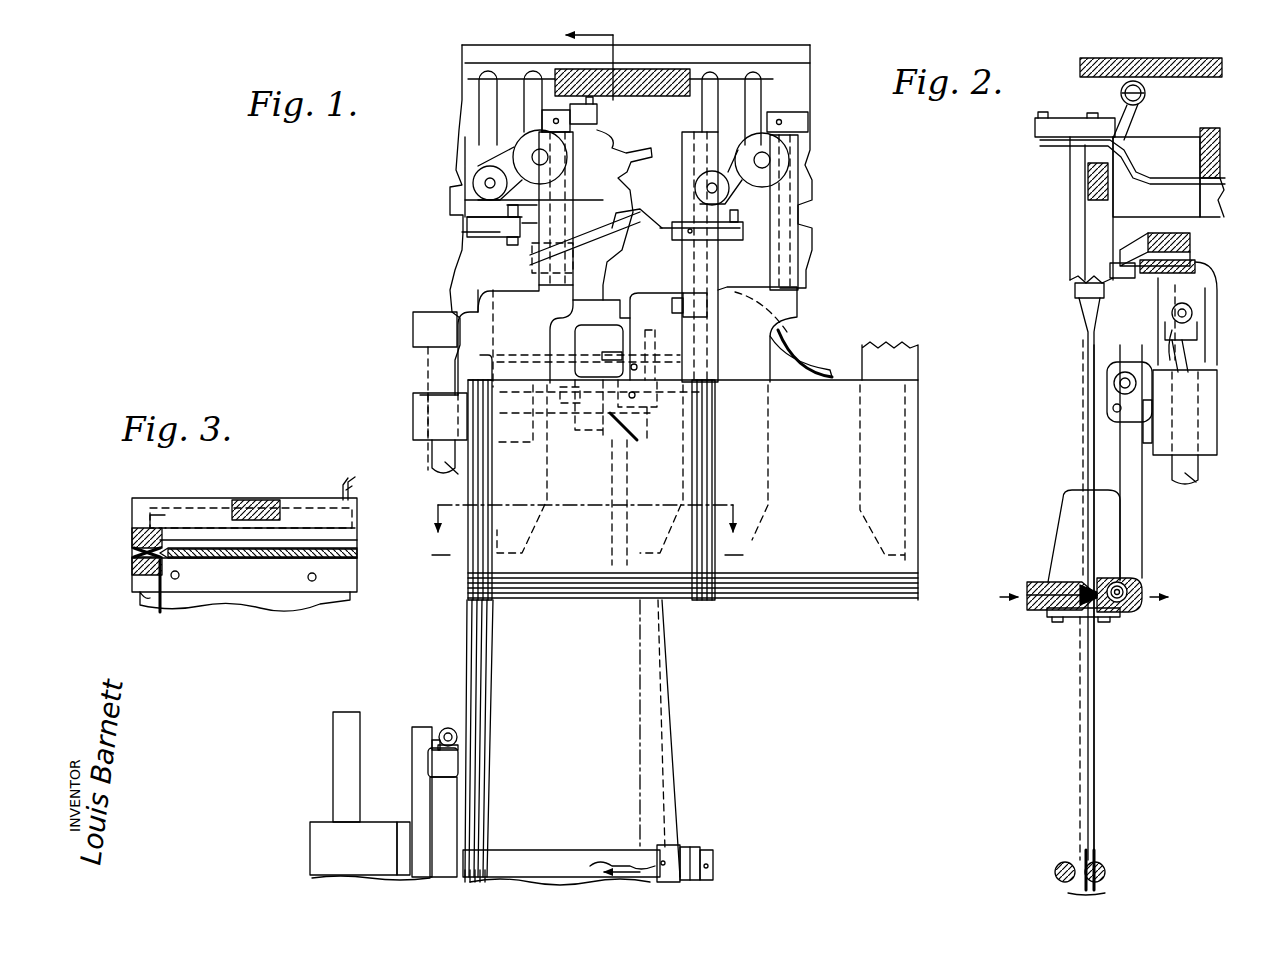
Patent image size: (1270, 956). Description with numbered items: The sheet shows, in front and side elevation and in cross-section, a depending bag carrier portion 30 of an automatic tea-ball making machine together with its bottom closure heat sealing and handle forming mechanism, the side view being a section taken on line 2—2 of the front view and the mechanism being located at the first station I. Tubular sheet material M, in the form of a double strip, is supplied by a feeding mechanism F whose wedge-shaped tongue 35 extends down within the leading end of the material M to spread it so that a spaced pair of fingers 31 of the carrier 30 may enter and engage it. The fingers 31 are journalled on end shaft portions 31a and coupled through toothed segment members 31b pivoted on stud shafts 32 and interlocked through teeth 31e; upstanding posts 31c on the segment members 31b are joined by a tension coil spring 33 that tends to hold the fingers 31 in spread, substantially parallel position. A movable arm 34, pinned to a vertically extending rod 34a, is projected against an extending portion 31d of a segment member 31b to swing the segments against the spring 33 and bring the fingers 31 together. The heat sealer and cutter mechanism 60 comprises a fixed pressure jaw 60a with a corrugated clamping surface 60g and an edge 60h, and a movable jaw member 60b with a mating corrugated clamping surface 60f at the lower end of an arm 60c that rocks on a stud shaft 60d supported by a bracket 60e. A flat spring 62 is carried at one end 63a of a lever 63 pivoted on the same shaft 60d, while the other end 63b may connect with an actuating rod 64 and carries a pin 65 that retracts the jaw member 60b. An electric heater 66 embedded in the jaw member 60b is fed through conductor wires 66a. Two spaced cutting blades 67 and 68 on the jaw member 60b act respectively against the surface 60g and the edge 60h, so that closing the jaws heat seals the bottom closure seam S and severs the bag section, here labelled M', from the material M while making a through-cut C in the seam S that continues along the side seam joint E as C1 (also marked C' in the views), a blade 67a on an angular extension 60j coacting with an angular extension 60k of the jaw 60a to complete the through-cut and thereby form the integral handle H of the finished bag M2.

In FIG. 1, the depending bag carrier portion 30 is at (818, 312).
In FIG. 1, the fingers 31 is at (507, 330).
In FIG. 2, the fingers 31 is at (1088, 355).
In FIG. 3, the fingers 31 is at (300, 556).
In FIG. 1, the end shaft portions 31a is at (556, 110).
In FIG. 2, the end shaft portions 31a is at (1092, 113).
In FIG. 1, the toothed segment members 31b is at (600, 166).
In FIG. 2, the toothed segment members 31b is at (1088, 178).
In FIG. 1, the upstanding posts 31c is at (533, 78).
In FIG. 2, the upstanding posts 31c is at (1125, 118).
In FIG. 1, the extending portion 31d is at (598, 262).
In FIG. 2, the extending portion 31d is at (1192, 240).
In FIG. 1, the teeth 31e is at (592, 252).
In FIG. 1, the stud shafts 32 is at (520, 160).
In FIG. 1, the tension coil spring 33 is at (668, 72).
In FIG. 2, the tension coil spring 33 is at (1146, 95).
In FIG. 1, the movable arm 34 is at (537, 263).
In FIG. 2, the movable arm 34 is at (1197, 268).
In FIG. 1, the vertically extending rod 34a is at (430, 384).
In FIG. 2, the vertically extending rod 34a is at (1196, 476).
In FIG. 1, the wedge-shaped tongue 35 is at (662, 705).
In FIG. 2, the wedge-shaped tongue 35 is at (1092, 683).
In FIG. 2, the heat sealer and cutter mechanism 60 is at (1120, 620).
In FIG. 3, the heat sealer and cutter mechanism 60 is at (116, 496).
In FIG. 1, the fixed pressure jaw 60a is at (470, 605).
In FIG. 2, the fixed pressure jaw 60a is at (1030, 615).
In FIG. 3, the fixed pressure jaw 60a is at (205, 585).
In FIG. 2, the movable jaw member 60b is at (1135, 605).
In FIG. 3, the movable jaw member 60b is at (213, 508).
In FIG. 2, the arm 60c is at (1140, 540).
In FIG. 3, the arm 60c is at (258, 500).
In FIG. 2, the stud shaft 60d is at (1112, 383).
In FIG. 1, the bracket 60e is at (413, 420).
In FIG. 2, the bracket 60e is at (1210, 394).
In FIG. 2, the corrugated clamping surface 60f is at (1112, 565).
In FIG. 3, the corrugated clamping surface 60f is at (352, 553).
In FIG. 2, the corrugated clamping surface 60g is at (1075, 584).
In FIG. 3, the corrugated clamping surface 60g is at (352, 558).
In FIG. 2, the edge 60h is at (1078, 620).
In FIG. 2, the angular extension 60j is at (1105, 516).
In FIG. 3, the angular extension 60j is at (140, 510).
In FIG. 2, the angular extension 60k is at (1062, 530).
In FIG. 3, the angular extension 60k is at (150, 592).
In FIG. 1, the flat spring 62 is at (586, 430).
In FIG. 2, the flat spring 62 is at (1150, 433).
In FIG. 1, the lever 63 is at (690, 340).
In FIG. 2, the lever 63 is at (1165, 328).
In FIG. 1, the lever end 63a is at (668, 336).
In FIG. 2, the lever end 63a is at (1165, 345).
In FIG. 2, the lever end 63b is at (1192, 312).
In FIG. 1, the actuating rod 64 is at (782, 348).
In FIG. 2, the actuating rod 64 is at (1182, 350).
In FIG. 1, the pin 65 is at (637, 436).
In FIG. 2, the pin 65 is at (1115, 408).
In FIG. 2, the electric heater 66 is at (1140, 580).
In FIG. 3, the electric heater 66 is at (184, 510).
In FIG. 3, the conductor wires 66a is at (343, 495).
In FIG. 2, the cutting blade 67 is at (1100, 622).
In FIG. 3, the blade 67a is at (135, 540).
In FIG. 2, the cutting blade 68 is at (1084, 625).
In FIG. 1, the section line 2— 2 is at (610, 454).
In FIG. 1, the tubular sheet material M is at (588, 742).
In FIG. 2, the tubular sheet material M is at (1070, 819).
In FIG. 1, the material layer M' is at (593, 641).
In FIG. 3, the material layer M' is at (309, 624).
In FIG. 1, the bag M2 is at (832, 472).
In FIG. 2, the bag M2 is at (1080, 460).
In FIG. 1, the side seam joint E is at (468, 470).
In FIG. 3, the side seam joint E is at (165, 612).
In FIG. 1, the integral handle H is at (470, 556).
In FIG. 2, the integral handle H is at (1030, 590).
In FIG. 3, the integral handle H is at (135, 553).
In FIG. 1, the through-cut C is at (680, 621).
In FIG. 1, the cloth edge C' is at (592, 455).
In FIG. 3, the through-cut portion C1 is at (135, 565).
In FIG. 1, the bottom closure seam joint S is at (730, 594).
In FIG. 1, the feeding mechanism F is at (408, 722).
In FIG. 1, the first station I is at (740, 630).
In FIG. 2, the first station I is at (1016, 318).